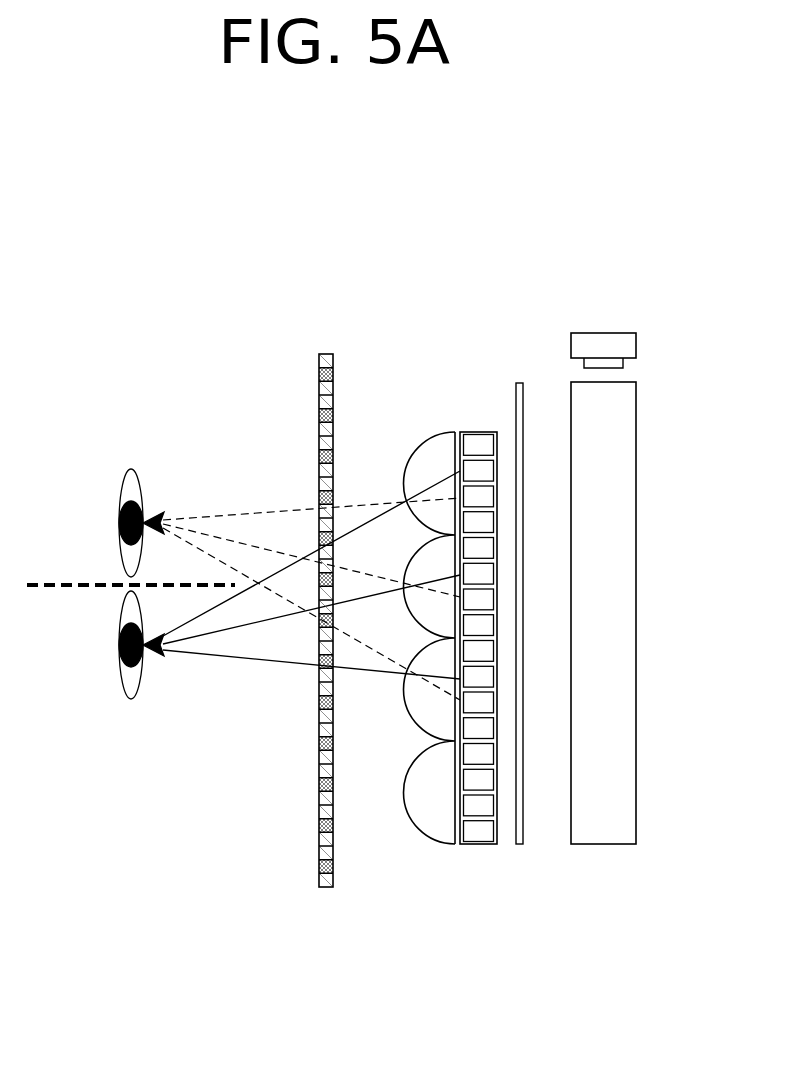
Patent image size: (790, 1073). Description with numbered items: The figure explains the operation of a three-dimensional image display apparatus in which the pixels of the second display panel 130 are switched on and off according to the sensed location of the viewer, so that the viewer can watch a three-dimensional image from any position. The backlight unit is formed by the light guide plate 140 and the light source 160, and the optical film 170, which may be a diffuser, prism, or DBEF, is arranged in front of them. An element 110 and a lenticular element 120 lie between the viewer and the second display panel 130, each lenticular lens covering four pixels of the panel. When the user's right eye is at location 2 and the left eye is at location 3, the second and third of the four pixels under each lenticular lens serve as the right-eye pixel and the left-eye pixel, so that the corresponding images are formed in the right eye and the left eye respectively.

The parallax barrier 110 is at (331, 352).
The lenticular lens 120 is at (422, 438).
The second display panel 130 is at (476, 430).
The light guide plate 140 is at (636, 417).
The light source 160 is at (636, 343).
The optical film 170 is at (519, 381).
The right eye location 2 is at (113, 645).
The left eye location 3 is at (113, 523).